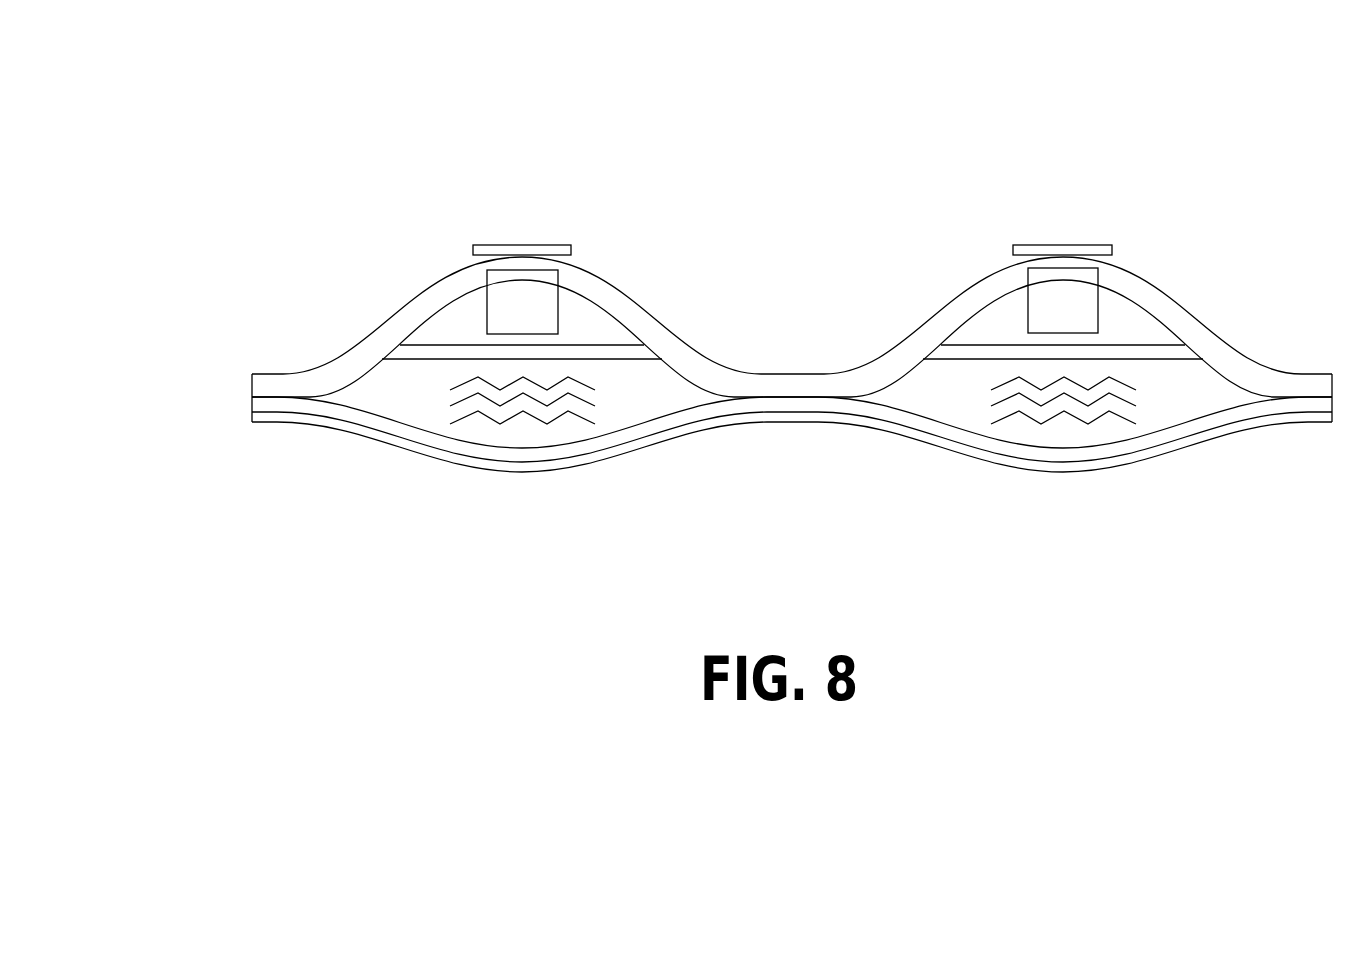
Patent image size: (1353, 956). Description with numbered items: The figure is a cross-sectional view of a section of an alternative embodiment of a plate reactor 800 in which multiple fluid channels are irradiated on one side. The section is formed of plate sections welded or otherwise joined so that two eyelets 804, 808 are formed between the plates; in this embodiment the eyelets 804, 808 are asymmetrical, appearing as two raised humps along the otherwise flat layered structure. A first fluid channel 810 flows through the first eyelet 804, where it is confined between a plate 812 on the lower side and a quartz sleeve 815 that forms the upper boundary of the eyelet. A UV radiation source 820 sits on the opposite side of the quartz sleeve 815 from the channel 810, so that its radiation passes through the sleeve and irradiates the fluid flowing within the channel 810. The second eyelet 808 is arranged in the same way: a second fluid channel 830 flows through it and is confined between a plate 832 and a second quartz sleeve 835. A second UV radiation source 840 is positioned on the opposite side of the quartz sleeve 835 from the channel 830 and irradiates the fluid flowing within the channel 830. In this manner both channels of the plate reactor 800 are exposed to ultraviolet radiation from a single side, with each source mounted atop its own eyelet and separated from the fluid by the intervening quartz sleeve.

The plate reactor 800 is at (556, 115).
The first eyelet 804 is at (338, 203).
The second eyelet 808 is at (953, 205).
The first fluid channel 810 is at (390, 403).
The plate 812 is at (541, 475).
The quartz sleeve 815 is at (357, 373).
The UV radiation source 820 is at (560, 308).
The second fluid channel 830 is at (1100, 410).
The plate 832 is at (1172, 318).
The second quartz sleeve 835 is at (960, 355).
The second UV radiation source 840 is at (1062, 292).